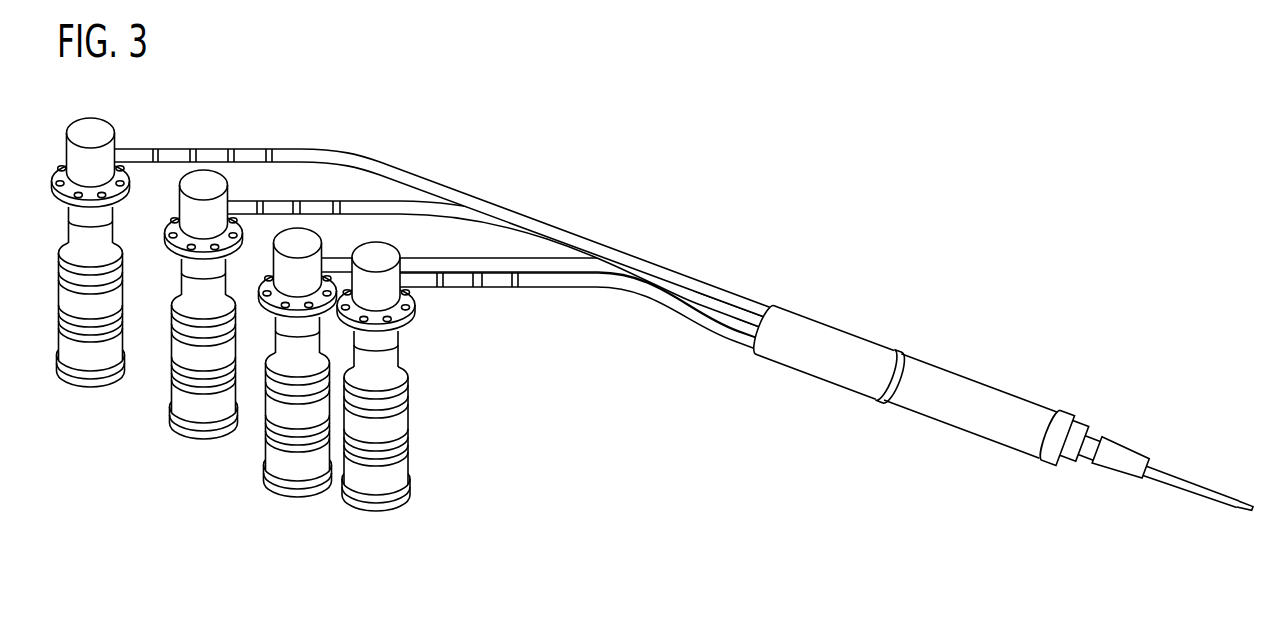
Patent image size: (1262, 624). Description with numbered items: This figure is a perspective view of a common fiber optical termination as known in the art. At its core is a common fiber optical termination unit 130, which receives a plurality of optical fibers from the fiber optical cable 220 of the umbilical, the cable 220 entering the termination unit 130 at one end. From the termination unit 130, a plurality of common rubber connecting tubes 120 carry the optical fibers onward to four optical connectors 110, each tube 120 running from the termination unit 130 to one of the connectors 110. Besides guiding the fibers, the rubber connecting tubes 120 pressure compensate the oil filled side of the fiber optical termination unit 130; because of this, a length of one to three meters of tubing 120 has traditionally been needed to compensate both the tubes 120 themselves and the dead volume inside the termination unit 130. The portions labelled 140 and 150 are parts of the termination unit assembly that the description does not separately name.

The optical connectors 110 is at (362, 487).
The rubber connecting tubes 120 is at (566, 286).
The common fiber optical termination unit 130 is at (676, 310).
The sheath 140 is at (821, 340).
The handle housing 150 is at (990, 404).
The fiber optical cable 220 is at (1193, 483).